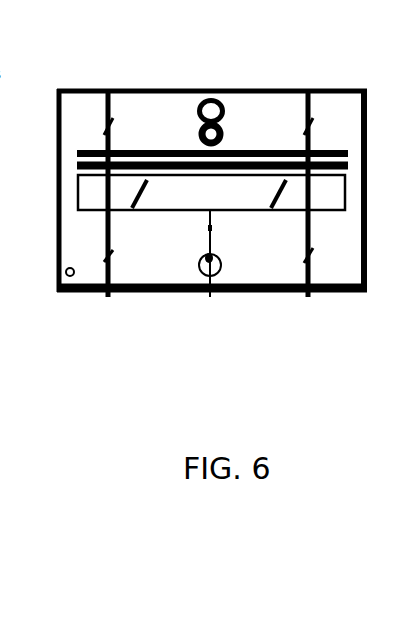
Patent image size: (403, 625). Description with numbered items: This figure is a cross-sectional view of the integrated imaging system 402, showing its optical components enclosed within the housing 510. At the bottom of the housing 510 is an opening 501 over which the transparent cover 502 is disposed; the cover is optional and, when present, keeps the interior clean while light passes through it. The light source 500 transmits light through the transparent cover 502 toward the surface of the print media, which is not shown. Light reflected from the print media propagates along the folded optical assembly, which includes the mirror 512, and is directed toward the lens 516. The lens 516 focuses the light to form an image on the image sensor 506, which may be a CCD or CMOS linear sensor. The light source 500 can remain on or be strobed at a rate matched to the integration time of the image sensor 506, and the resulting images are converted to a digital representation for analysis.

The integrated imaging system 402 is at (94, 61).
The housing 510 is at (57, 150).
The lens 516 is at (153, 150).
The image sensor 506 is at (228, 108).
The mirror 512 is at (148, 212).
The light source 500 is at (199, 262).
The transparent cover 502 is at (266, 292).
The opening 501 is at (340, 292).